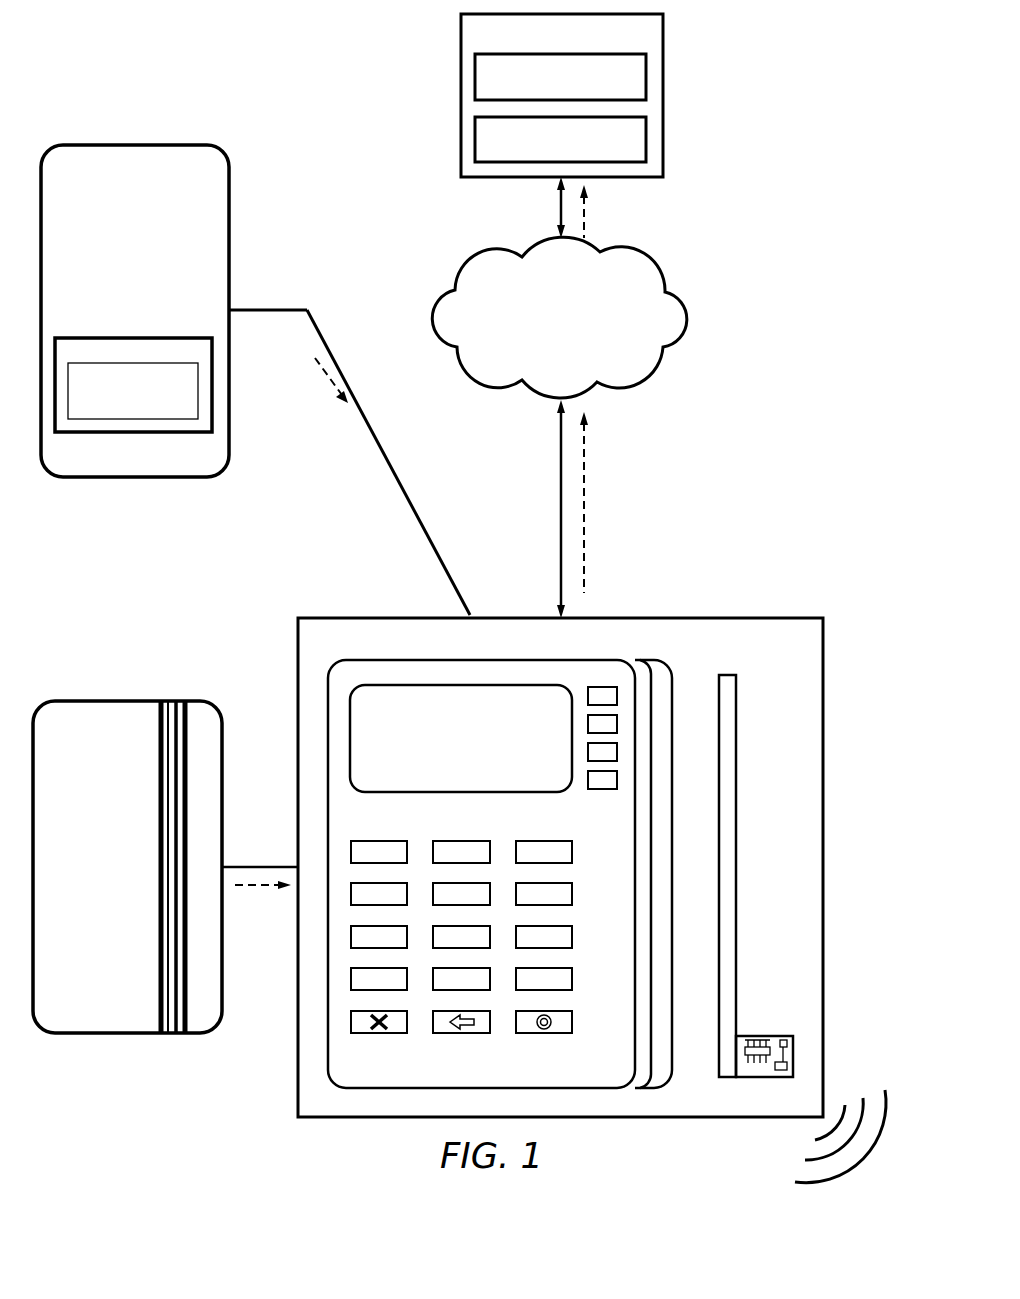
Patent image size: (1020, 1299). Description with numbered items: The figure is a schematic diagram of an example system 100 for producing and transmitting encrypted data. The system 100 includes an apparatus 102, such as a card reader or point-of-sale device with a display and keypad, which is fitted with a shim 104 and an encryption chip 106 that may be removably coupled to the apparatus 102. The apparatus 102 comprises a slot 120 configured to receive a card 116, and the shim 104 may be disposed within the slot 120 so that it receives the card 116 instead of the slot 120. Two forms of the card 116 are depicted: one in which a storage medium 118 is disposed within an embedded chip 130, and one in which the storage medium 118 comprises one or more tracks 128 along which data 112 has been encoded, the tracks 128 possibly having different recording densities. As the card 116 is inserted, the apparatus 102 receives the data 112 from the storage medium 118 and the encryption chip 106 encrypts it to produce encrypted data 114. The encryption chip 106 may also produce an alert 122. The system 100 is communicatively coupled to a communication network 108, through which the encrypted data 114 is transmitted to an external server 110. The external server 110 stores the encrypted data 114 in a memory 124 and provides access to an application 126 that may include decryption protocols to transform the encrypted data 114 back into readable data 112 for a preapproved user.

The system 100 is at (810, 20).
The apparatus 102 is at (430, 660).
The shim 104 is at (726, 819).
The encryption chip 106 is at (768, 1036).
The communication network 108 is at (559, 317).
The external server 110 is at (562, 95).
The data 112 is at (329, 378).
The encrypted data 114 is at (585, 210).
The card 116 is at (115, 479).
The storage medium 118 is at (178, 702).
The slot 120 is at (643, 810).
The alert 122 is at (803, 1148).
The memory 124 is at (560, 77).
The application 126 is at (560, 139).
The tracks 128 is at (163, 1035).
The chip 130 is at (131, 338).